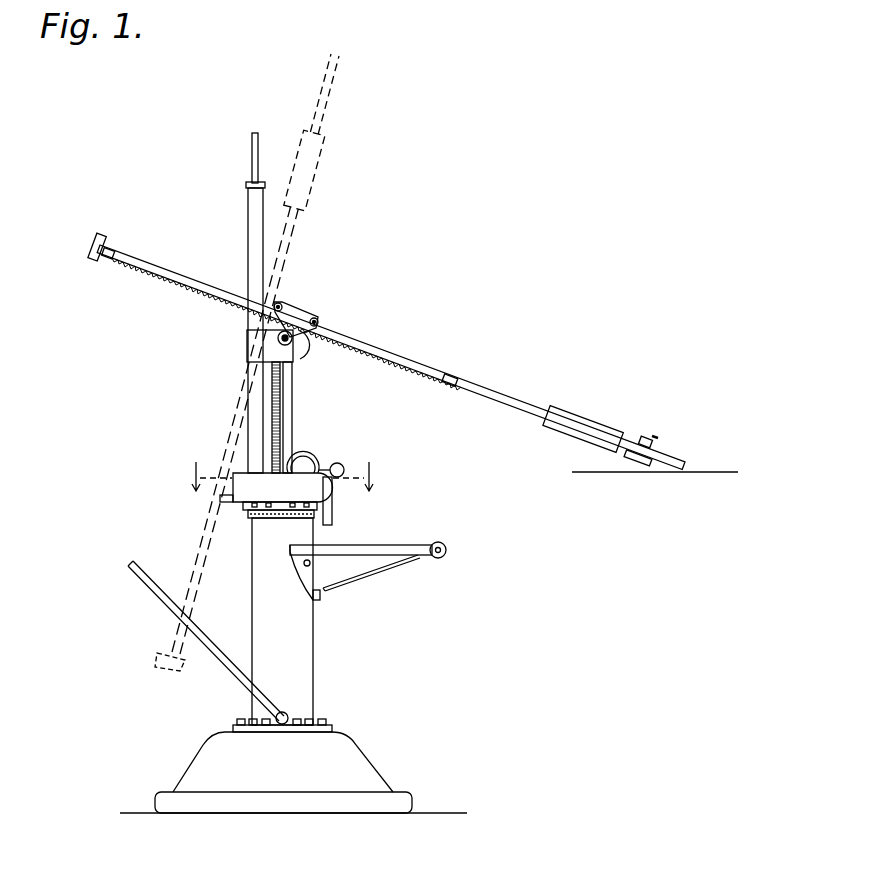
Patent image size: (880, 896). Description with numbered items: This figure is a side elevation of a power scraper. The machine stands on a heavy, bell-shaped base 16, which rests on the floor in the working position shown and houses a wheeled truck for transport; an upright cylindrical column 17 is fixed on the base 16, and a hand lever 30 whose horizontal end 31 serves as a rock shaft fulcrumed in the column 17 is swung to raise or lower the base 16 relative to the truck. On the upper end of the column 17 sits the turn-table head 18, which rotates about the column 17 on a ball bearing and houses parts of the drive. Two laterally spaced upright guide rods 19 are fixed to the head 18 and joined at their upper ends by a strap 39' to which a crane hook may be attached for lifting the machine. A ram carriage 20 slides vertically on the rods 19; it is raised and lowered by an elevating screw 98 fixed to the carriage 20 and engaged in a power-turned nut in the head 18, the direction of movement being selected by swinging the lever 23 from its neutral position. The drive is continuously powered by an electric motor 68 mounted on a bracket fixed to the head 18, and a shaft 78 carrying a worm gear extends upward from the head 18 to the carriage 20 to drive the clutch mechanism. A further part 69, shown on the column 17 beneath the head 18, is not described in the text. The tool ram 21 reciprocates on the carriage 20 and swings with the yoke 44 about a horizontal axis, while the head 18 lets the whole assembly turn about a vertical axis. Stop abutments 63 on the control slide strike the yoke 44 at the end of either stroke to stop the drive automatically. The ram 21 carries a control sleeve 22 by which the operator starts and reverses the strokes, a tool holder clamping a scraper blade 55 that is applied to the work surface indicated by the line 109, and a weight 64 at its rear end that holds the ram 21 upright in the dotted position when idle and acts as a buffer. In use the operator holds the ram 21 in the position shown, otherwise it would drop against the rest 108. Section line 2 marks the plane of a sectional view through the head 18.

The strap 39' is at (225, 143).
The guide rods 19 is at (256, 398).
The ram carriage 20 is at (276, 342).
The yoke 44 is at (288, 325).
The shaft 78 is at (290, 378).
The elevating screw 98 is at (275, 424).
The electric motor 68 is at (306, 452).
The lever 23 is at (340, 462).
The turn-table head 18 is at (332, 500).
The rest 108 is at (232, 500).
The column 17 is at (300, 622).
The bracket arm 69 is at (320, 530).
The horizontal end 31 is at (288, 716).
The hand lever 30 is at (133, 577).
The base 16 is at (362, 757).
The tool ram 21 is at (404, 362).
The weight 64 is at (90, 236).
The stop abutments 63 is at (113, 248).
The control sleeve 22 is at (563, 418).
The scraper blade 55 is at (668, 457).
The line 109 is at (645, 474).
The section line 2- 2 is at (283, 475).